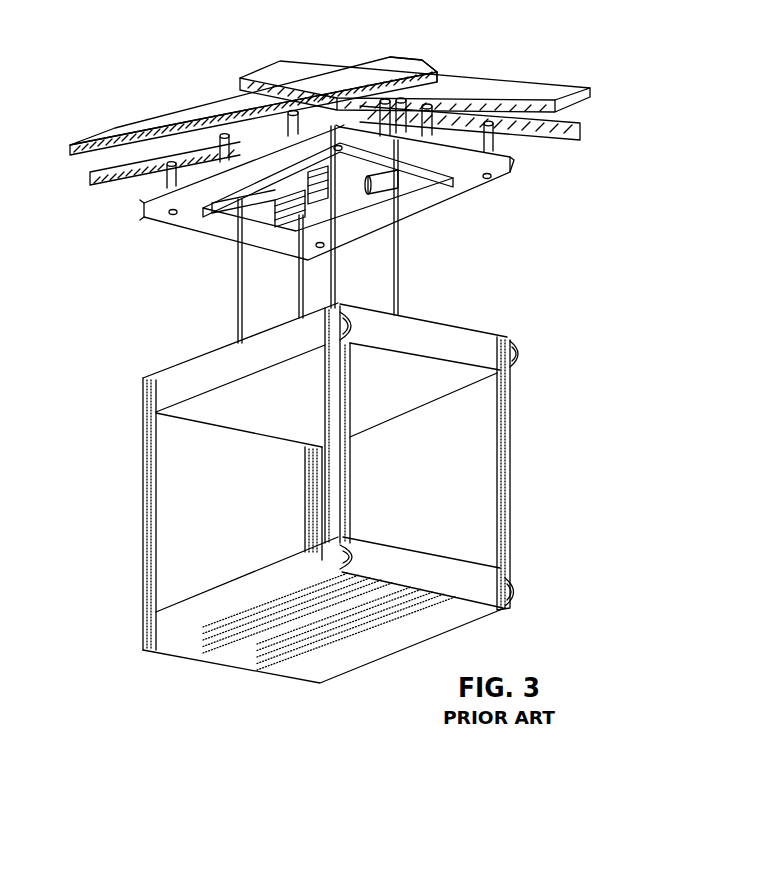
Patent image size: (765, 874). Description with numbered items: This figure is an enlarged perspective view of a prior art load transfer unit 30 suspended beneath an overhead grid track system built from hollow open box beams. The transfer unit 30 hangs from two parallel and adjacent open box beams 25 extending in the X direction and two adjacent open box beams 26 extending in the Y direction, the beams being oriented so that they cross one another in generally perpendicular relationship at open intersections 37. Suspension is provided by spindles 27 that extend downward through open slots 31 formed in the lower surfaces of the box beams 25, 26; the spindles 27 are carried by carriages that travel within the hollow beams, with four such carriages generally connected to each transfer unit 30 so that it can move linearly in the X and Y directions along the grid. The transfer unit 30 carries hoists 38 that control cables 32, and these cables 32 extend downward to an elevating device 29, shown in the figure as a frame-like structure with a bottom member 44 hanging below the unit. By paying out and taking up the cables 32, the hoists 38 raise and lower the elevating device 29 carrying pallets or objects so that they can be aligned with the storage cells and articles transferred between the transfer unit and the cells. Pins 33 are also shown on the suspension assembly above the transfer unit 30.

The open box beam 25 is at (130, 134).
The open box beam 26 is at (582, 127).
The spindle 27 is at (143, 198).
The elevating device 29 is at (134, 528).
The load transfer unit 30 is at (216, 242).
The open slot 31 is at (90, 172).
The cable 32 is at (400, 268).
The pin 33 is at (222, 136).
The open intersection 37 is at (438, 72).
The hoist 38 is at (268, 203).
The bottom panel 44 is at (175, 652).